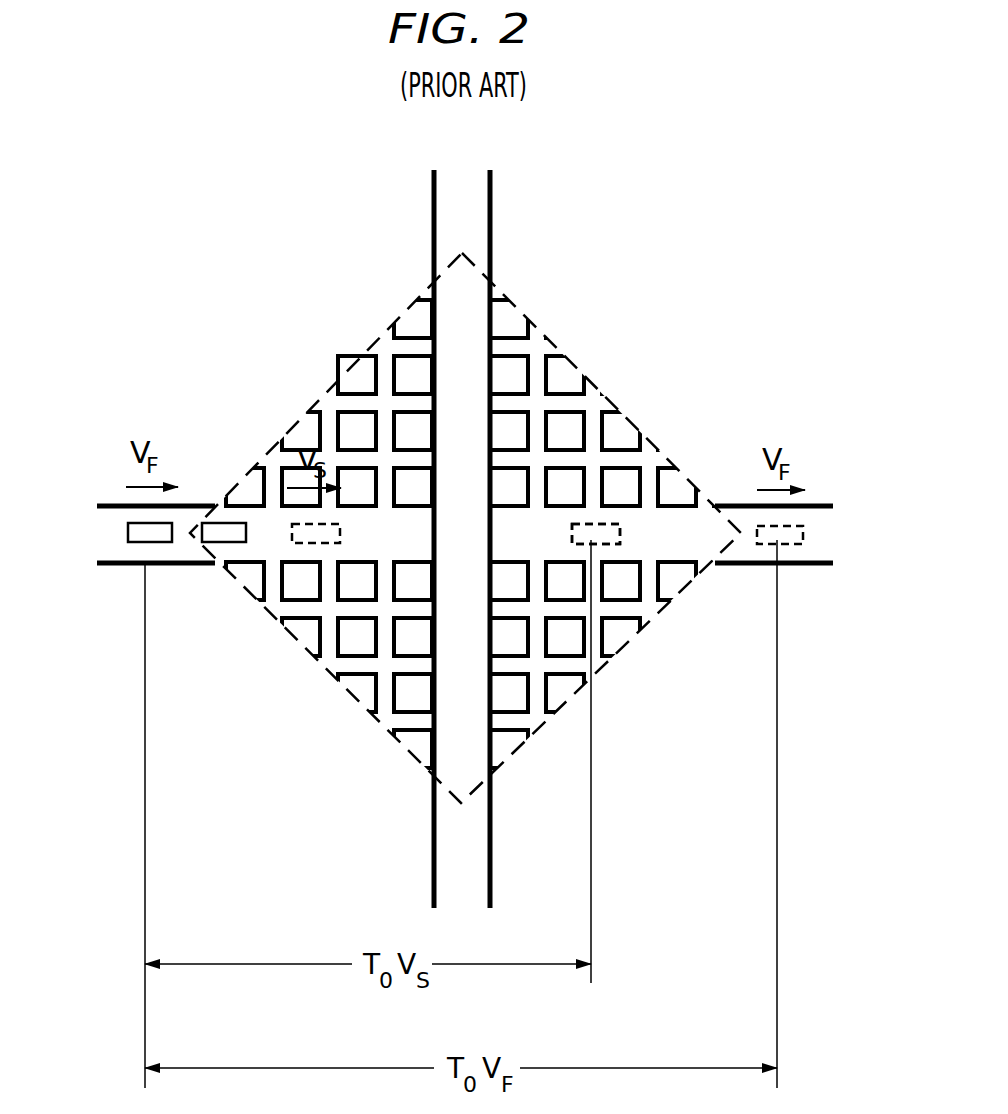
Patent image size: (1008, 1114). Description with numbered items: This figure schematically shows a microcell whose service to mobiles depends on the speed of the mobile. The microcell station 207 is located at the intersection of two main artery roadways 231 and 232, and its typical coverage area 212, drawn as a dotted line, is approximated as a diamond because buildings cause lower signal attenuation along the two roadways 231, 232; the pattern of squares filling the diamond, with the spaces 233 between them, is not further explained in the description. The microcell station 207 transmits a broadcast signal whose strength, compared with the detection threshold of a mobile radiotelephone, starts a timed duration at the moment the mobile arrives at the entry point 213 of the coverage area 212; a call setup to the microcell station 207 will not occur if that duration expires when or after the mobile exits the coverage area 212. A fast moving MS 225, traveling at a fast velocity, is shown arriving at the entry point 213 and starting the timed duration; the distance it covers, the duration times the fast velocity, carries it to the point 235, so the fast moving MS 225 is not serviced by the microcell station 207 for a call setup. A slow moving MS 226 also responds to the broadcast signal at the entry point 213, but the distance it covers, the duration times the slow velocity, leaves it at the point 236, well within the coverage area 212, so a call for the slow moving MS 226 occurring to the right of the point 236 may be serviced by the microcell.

The microcell station 207 is at (569, 535).
The coverage area 212 is at (367, 403).
The entry point 213 is at (203, 522).
The fast moving MS 225 is at (128, 533).
The slow moving MS 226 is at (238, 550).
The roadway 231 is at (380, 533).
The roadway 232 is at (458, 487).
The streets between pixels 233 is at (425, 407).
The point 235 is at (803, 534).
The point 236 is at (620, 533).